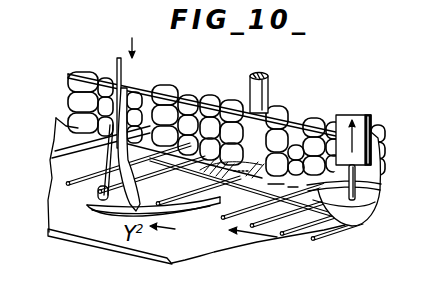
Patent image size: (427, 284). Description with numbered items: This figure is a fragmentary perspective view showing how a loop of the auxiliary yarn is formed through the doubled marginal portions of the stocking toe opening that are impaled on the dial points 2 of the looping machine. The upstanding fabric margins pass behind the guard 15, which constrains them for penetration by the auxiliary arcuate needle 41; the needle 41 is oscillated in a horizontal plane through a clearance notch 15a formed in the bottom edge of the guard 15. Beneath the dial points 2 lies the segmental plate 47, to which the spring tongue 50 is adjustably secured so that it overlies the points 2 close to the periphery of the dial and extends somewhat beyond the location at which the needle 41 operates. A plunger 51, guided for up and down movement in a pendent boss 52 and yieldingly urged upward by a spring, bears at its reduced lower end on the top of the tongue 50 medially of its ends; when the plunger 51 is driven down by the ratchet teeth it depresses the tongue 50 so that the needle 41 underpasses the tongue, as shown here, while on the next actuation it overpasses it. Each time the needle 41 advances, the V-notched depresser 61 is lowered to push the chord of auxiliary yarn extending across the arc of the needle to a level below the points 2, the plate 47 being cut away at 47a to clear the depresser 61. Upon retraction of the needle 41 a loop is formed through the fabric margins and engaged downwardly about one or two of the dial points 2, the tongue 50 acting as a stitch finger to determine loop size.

The dial points 2 is at (315, 238).
The guard 15 is at (297, 123).
The clearance notch 15a is at (283, 108).
The auxiliary arcuate needle 41 is at (189, 210).
The segmental plate 47 is at (65, 226).
The cut-away of the segmental plate 47a is at (98, 192).
The spring tongue 50 is at (350, 227).
The plunger 51 is at (372, 188).
The boss 52 is at (360, 116).
The depresser 61 is at (117, 61).